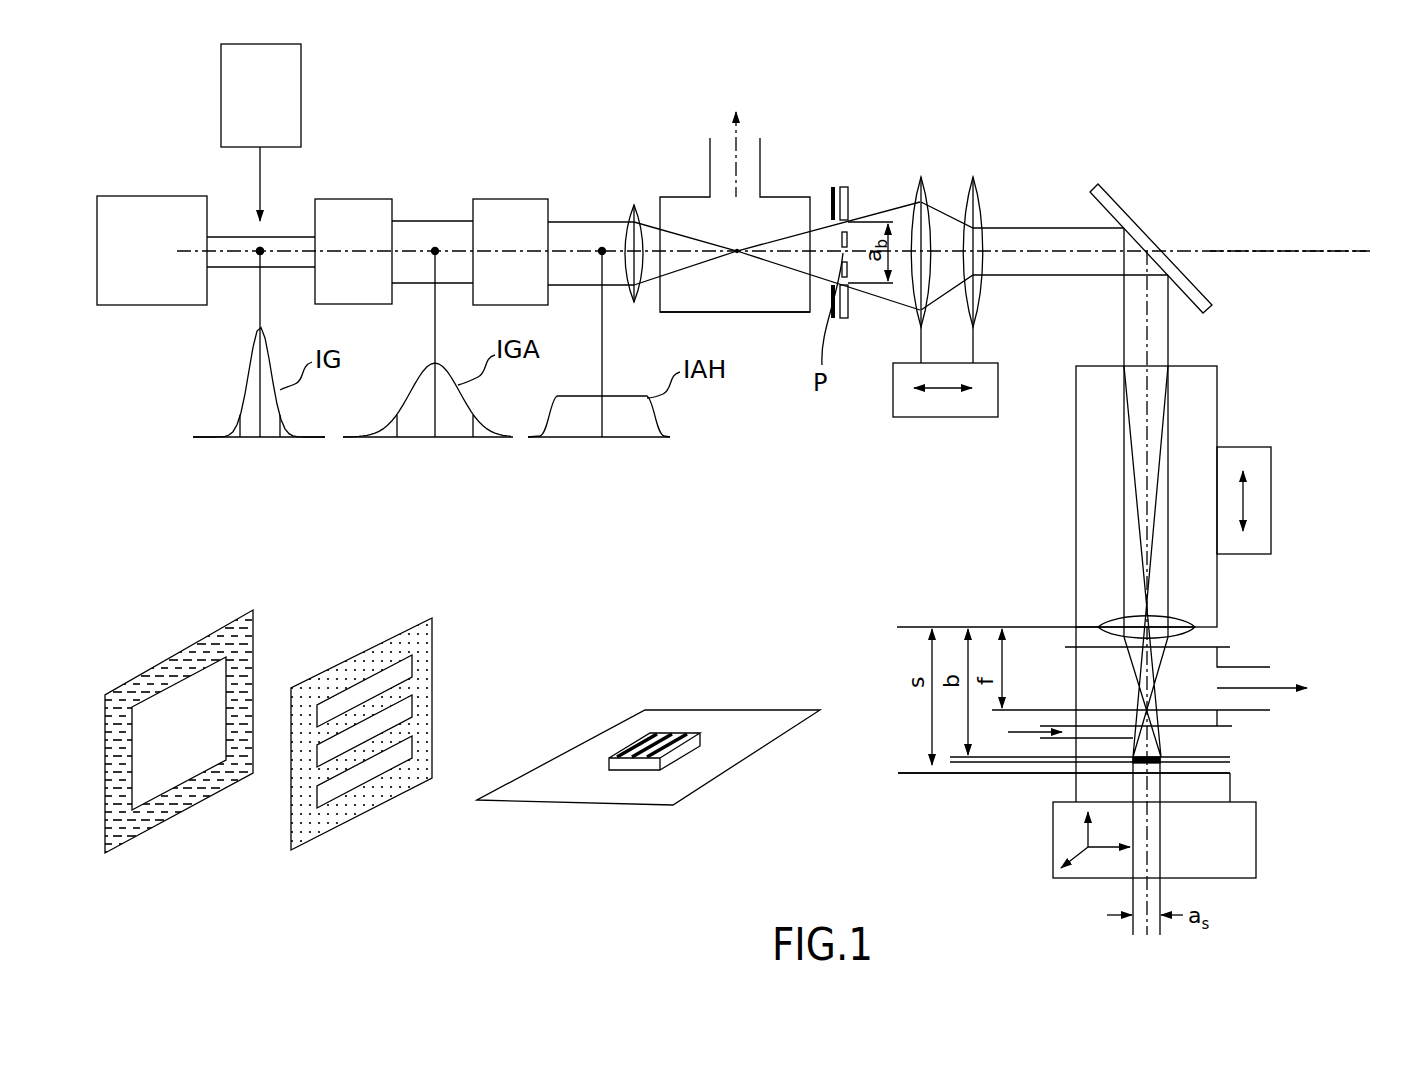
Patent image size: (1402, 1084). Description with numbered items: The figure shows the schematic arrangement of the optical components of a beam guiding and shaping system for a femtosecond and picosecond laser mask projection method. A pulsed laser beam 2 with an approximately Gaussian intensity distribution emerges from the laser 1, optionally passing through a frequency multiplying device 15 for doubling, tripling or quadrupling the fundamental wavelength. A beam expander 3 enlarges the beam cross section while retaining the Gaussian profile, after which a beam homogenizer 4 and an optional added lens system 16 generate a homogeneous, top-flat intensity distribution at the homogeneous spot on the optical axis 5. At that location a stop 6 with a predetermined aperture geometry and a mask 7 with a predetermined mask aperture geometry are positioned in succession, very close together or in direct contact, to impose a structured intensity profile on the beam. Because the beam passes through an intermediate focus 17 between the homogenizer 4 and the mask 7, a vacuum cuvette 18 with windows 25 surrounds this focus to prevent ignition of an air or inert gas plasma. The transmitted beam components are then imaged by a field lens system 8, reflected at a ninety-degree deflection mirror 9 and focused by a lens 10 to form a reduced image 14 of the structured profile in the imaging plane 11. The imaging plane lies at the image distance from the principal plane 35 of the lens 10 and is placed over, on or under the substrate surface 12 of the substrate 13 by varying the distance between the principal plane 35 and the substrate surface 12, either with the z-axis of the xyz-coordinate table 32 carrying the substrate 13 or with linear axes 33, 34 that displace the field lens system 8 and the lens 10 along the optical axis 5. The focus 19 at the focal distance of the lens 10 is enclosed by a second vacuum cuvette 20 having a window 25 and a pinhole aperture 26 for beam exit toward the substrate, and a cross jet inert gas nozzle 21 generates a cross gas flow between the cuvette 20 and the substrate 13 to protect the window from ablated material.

The laser 1 is at (113, 215).
The pulsed laser beam 2 is at (247, 250).
The beam expander 3 is at (358, 215).
The beam homogenizer 4 is at (497, 218).
The optical axis 5 is at (1200, 253).
The stop 6 is at (833, 185).
The mask 7 is at (847, 185).
The field lens system 8 is at (973, 177).
The deflection mirror 9 is at (1098, 193).
The lens 10 is at (1200, 402).
The imaging plane 11 is at (1173, 762).
The substrate surface 12 is at (1230, 773).
The substrate 13 is at (1213, 792).
The reduced image 14 is at (1158, 759).
The frequency multiplying device 15 is at (283, 122).
The added lens system 16 is at (633, 207).
The intermediate focus 17 is at (737, 251).
The vacuum cuvette 18 is at (773, 208).
The focus 1 19 is at (1147, 710).
The vacuum cuvette 2 20 is at (1190, 673).
The cross jet inert gas nozzle 21 is at (1075, 733).
The window 25 is at (678, 197).
The pinhole aperture 26 is at (1172, 728).
The xyz-coordinate table 32 is at (1212, 833).
The linear axis 33 is at (907, 405).
The linear axis 34 is at (1255, 472).
The principal plane 35 is at (1200, 625).